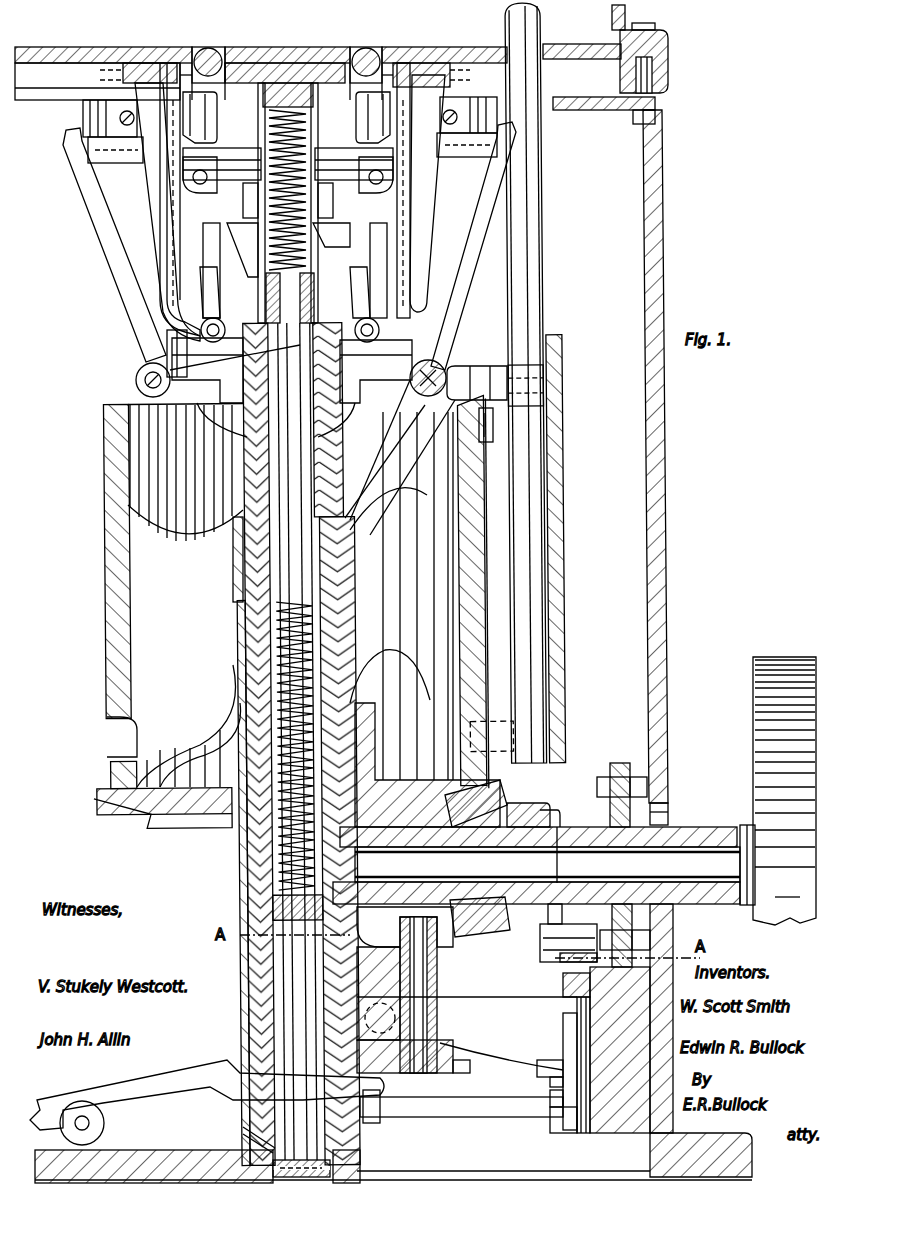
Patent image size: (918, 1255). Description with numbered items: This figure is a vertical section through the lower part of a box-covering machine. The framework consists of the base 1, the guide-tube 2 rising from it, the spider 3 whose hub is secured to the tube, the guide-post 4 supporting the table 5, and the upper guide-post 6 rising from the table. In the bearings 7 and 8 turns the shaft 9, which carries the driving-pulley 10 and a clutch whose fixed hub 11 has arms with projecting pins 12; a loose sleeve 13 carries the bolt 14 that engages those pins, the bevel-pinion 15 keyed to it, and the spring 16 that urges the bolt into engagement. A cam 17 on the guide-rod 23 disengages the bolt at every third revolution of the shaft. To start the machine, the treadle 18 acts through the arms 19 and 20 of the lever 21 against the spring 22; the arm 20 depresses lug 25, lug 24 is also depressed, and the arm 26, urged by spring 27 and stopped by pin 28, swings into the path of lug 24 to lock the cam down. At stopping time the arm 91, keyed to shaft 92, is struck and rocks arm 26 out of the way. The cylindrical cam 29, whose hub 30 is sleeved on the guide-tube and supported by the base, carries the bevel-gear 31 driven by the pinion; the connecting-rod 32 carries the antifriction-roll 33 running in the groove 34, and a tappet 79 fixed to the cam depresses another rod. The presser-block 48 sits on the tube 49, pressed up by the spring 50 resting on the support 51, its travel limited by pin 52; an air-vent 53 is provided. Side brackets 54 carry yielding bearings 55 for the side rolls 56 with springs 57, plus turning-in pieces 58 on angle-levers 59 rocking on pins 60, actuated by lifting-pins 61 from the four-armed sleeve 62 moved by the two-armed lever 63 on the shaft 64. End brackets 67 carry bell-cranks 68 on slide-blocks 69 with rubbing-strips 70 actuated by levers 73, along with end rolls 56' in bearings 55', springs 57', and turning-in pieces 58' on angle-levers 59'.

The base 1 is at (243, 855).
The guide-tube 2 is at (268, 555).
The spider 3 is at (243, 363).
The guide-post 4 is at (668, 530).
The table 5 is at (45, 45).
The upper guide-post 6 is at (625, 14).
The bearing 7 is at (410, 855).
The bearing 8 is at (710, 827).
The shaft 9 is at (648, 865).
The driving-pulley 10 is at (785, 662).
The fixed hub 11 is at (580, 817).
The projecting pins 12 is at (600, 768).
The loose sleeve 13 is at (540, 800).
The bolt 14 is at (540, 945).
The bevel-pinion 15 is at (500, 790).
The spring 16 is at (562, 913).
The cam 17 is at (563, 983).
The treadle 18 is at (150, 1097).
The arm 19 is at (372, 1120).
The arm 20 is at (550, 1110).
The lever 21 is at (465, 1118).
The spring 22 is at (498, 997).
The guide-rod 23 is at (612, 1033).
The lug 24 is at (546, 1058).
The lug 25 is at (560, 1133).
The arm 26 is at (492, 1055).
The spring 27 is at (460, 1075).
The pin 28 is at (550, 1083).
The cam 29 is at (103, 608).
The hub 30 is at (352, 682).
The bevel-gear 31 is at (375, 768).
The connecting-rod 32 is at (540, 282).
The antifriction-roll 33 is at (478, 363).
The groove 34 is at (107, 738).
The presser-block 48 is at (295, 45).
The tube 49 is at (290, 292).
The spring 50 is at (295, 625).
The support 51 is at (300, 1177).
The pin 52 is at (268, 905).
The air-vent 53 is at (243, 1130).
The side brackets 54 is at (158, 205).
The yielding bearings 55 is at (301, 59).
The yielding bearings 55' is at (285, 186).
The side rolls 56 is at (289, 49).
The end rolls 56' is at (288, 164).
The springs 57 is at (285, 96).
The springs 57' is at (282, 201).
The turning-in pieces 58 is at (294, 270).
The turning-in pieces 58' is at (331, 236).
The angle-levers 59 is at (285, 292).
The angle-levers 59' is at (245, 250).
The pins 60 is at (200, 335).
The lifting-pins 61 is at (137, 372).
The four-armed sleeve 62 is at (243, 472).
The two-armed lever 63 is at (380, 450).
The shaft 64 is at (428, 396).
The end brackets 67 is at (285, 199).
The bell-cranks 68 is at (85, 112).
The slide-blocks 69 is at (122, 143).
The rubbing-strips 70 is at (218, 118).
The levers 73 is at (110, 272).
The tappet 79 is at (494, 420).
The arm 91 is at (407, 935).
The shaft 92 is at (437, 985).